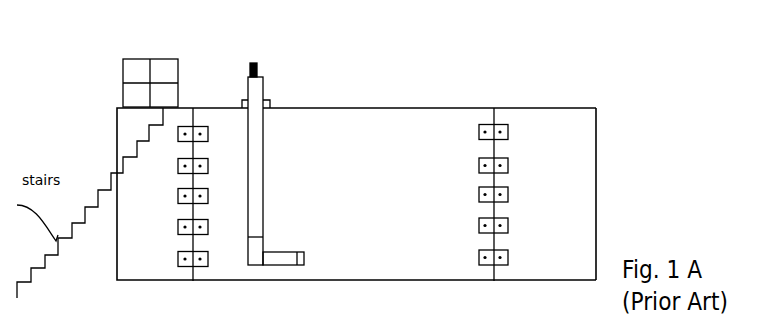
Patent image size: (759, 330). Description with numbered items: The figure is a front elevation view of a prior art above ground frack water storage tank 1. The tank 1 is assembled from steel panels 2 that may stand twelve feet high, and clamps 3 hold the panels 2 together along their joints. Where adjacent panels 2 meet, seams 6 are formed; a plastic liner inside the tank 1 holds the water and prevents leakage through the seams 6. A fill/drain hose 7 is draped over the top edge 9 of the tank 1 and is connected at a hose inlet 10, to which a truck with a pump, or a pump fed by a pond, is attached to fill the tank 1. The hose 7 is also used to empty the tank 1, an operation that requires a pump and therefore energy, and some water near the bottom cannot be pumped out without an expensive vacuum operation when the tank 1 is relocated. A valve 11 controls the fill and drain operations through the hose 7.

The frack water storage tank 1 is at (356, 159).
The steel panel 2 is at (140, 270).
The clamp 3 is at (504, 129).
The seam 6 is at (494, 107).
The fill/drain hose 7 is at (265, 177).
The top edge 9 is at (567, 105).
The hose inlet 10 is at (295, 251).
The valve 11 is at (256, 62).